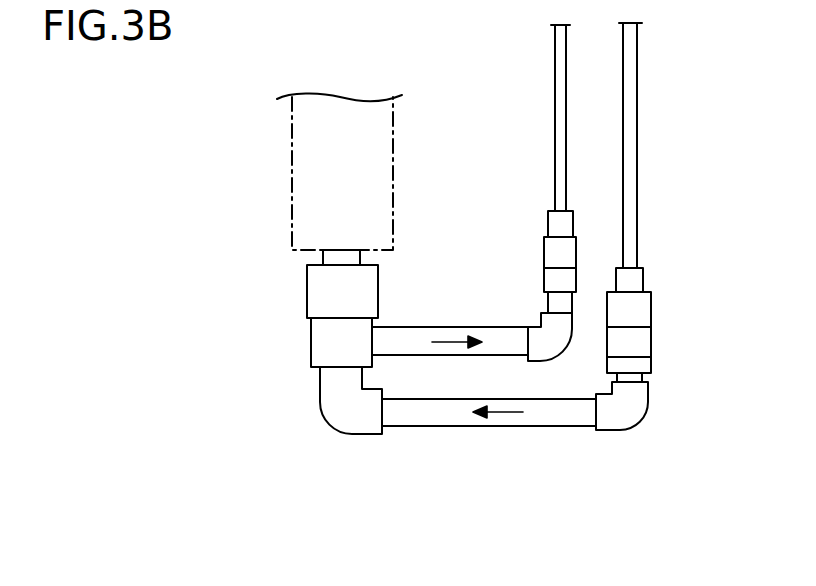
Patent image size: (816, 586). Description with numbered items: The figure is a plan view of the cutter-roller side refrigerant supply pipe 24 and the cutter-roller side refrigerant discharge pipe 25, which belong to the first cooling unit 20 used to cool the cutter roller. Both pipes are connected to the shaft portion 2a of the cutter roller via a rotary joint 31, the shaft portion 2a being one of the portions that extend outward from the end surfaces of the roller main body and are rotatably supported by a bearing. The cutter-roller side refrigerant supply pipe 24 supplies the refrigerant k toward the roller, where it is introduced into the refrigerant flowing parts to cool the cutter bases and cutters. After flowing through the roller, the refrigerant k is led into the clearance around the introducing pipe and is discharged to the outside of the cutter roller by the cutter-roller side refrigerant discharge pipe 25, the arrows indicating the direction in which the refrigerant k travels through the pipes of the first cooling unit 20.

The shaft portion 2a is at (292, 175).
The rotary joint 31 is at (315, 347).
The first cooling unit 20 is at (366, 440).
The cutter-roller side refrigerant supply pipe 24 is at (427, 426).
The cutter-roller side refrigerant discharge pipe 25 is at (510, 343).
The refrigerant k is at (452, 342).